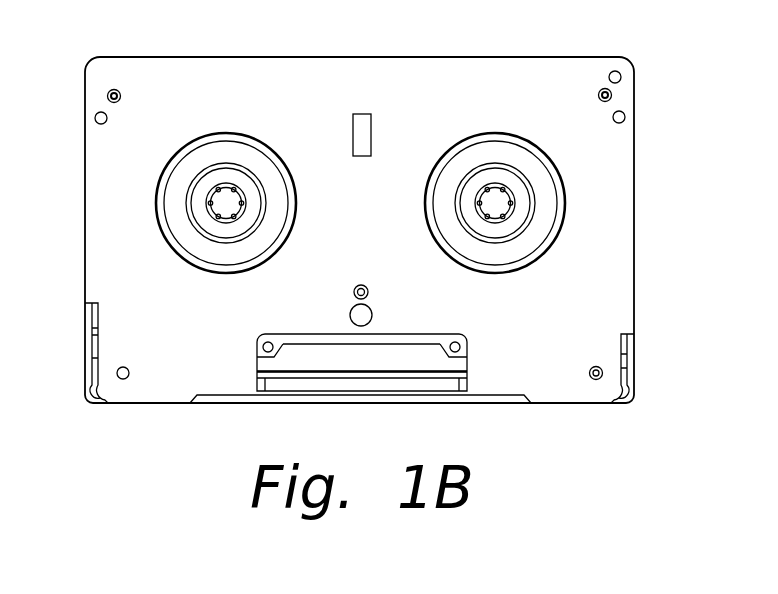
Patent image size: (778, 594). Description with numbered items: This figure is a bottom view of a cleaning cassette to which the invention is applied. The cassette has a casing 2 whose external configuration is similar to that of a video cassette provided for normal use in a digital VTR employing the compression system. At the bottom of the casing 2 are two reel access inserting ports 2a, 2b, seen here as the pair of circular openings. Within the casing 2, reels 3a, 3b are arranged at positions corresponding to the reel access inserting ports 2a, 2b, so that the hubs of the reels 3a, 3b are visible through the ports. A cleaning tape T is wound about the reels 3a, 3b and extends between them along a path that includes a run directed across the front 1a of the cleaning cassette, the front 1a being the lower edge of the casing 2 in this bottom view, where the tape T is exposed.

The casing 2 is at (636, 221).
The front of the cleaning cassette 1a is at (168, 404).
The reel access inserting port 2a is at (222, 143).
The reel access inserting port 2b is at (492, 143).
The reel 3a is at (208, 223).
The reel 3b is at (512, 223).
The cleaning tape T is at (373, 386).